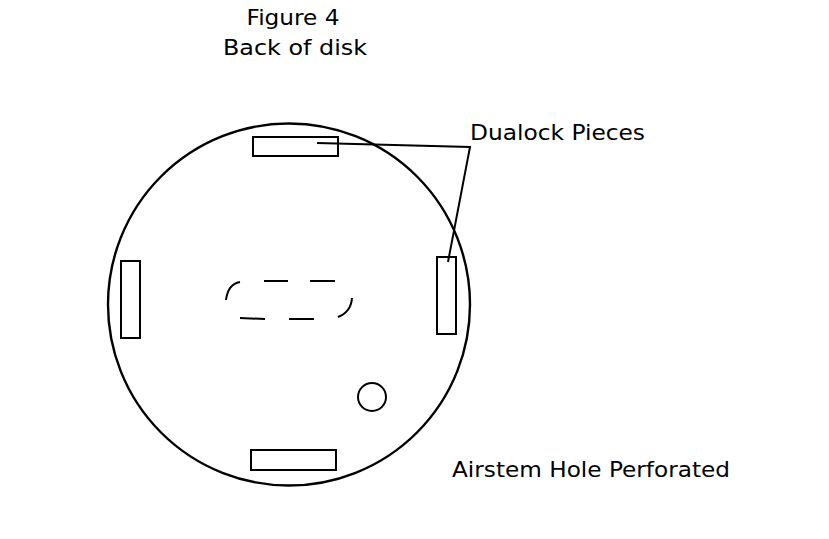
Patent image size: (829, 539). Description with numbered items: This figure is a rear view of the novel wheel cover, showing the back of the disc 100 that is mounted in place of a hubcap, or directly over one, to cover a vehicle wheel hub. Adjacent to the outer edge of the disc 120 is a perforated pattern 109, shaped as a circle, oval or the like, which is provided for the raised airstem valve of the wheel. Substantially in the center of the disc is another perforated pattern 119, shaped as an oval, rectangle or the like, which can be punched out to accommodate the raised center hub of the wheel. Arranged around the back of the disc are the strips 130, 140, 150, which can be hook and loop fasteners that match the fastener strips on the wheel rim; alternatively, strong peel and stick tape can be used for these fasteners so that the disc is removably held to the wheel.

The disc 100 is at (136, 161).
The perforated pattern 109 is at (381, 403).
The perforated pattern 119 is at (309, 281).
The outer edge of the disc 120 is at (177, 382).
The strip 130 is at (293, 137).
The strip 140 is at (447, 304).
The strip 150 is at (290, 470).